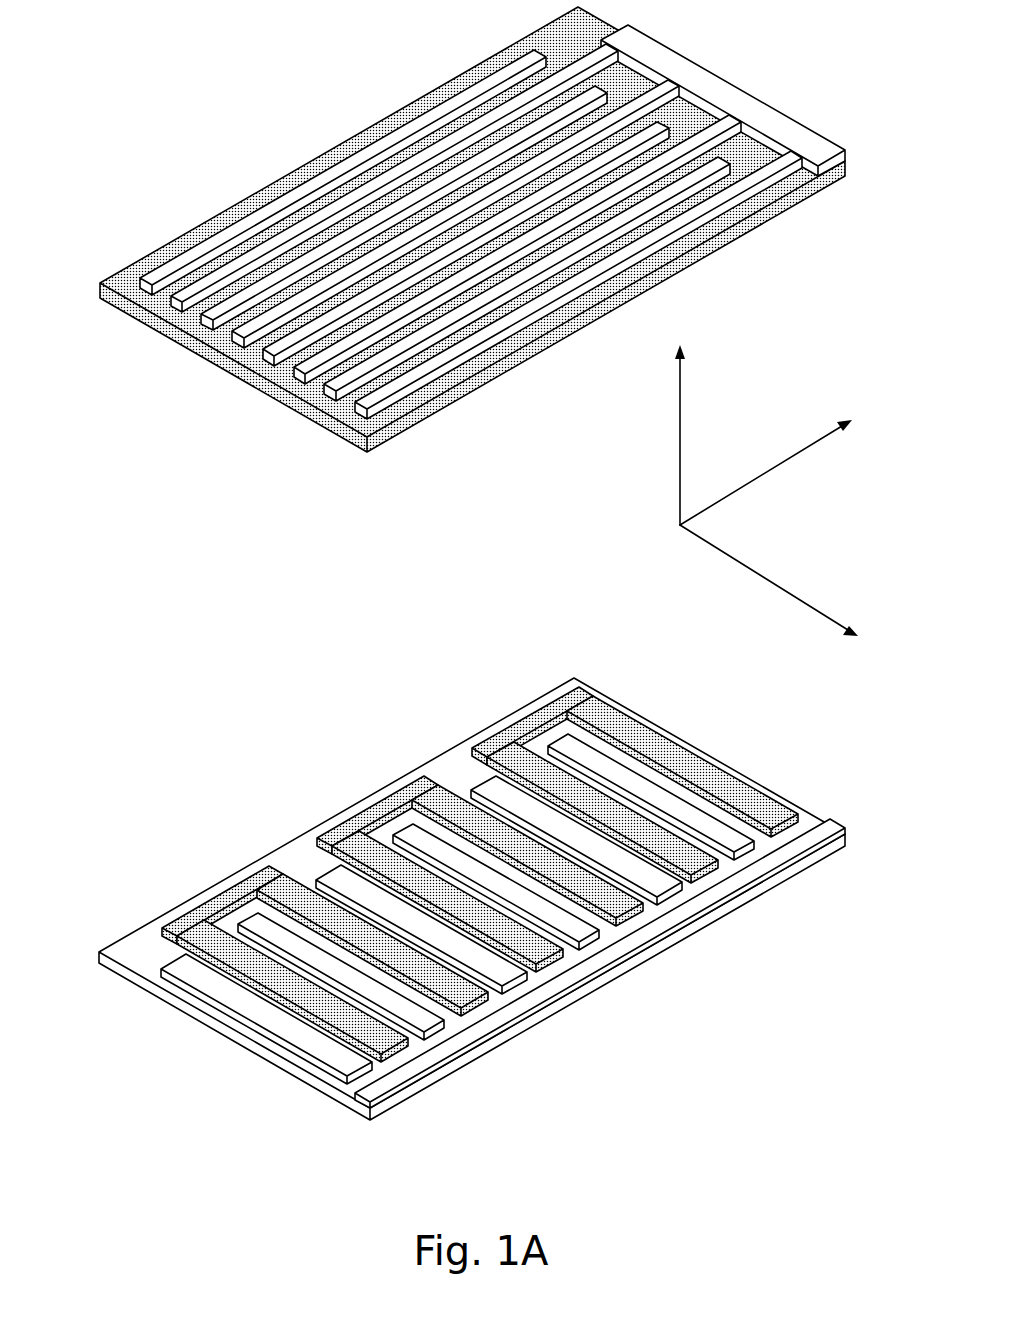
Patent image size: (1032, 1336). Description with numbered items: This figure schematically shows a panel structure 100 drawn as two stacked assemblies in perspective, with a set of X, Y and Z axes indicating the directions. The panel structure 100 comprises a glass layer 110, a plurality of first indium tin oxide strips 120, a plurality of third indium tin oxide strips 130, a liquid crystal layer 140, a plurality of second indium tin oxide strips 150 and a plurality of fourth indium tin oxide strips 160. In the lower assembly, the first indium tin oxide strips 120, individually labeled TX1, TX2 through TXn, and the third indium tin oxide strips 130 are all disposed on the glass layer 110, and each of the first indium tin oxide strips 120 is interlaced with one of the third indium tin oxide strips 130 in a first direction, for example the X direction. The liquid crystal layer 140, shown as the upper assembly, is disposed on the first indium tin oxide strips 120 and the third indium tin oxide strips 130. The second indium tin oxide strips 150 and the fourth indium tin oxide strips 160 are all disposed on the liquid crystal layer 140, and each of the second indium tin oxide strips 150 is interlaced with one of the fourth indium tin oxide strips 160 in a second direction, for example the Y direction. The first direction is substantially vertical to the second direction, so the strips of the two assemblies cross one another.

The panel structure 100 is at (470, 563).
The glass layer 110 is at (99, 952).
The first indium tin oxide strips 120 is at (532, 868).
The third indium tin oxide strips 130 is at (570, 743).
The liquid crystal layer 140 is at (703, 243).
The second indium tin oxide strips 150 is at (297, 371).
The fourth indium tin oxide strips 160 is at (140, 286).
The first indium tin oxide strip TX1 is at (796, 826).
The first indium tin oxide strip TX2 is at (641, 912).
The first indium tin oxide strip TXn is at (374, 976).